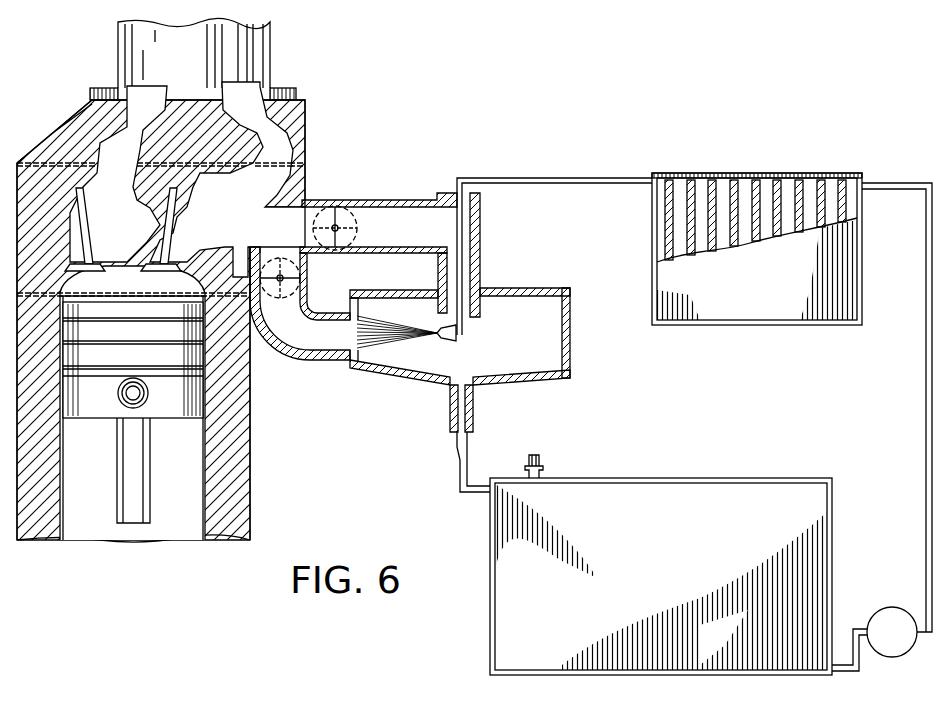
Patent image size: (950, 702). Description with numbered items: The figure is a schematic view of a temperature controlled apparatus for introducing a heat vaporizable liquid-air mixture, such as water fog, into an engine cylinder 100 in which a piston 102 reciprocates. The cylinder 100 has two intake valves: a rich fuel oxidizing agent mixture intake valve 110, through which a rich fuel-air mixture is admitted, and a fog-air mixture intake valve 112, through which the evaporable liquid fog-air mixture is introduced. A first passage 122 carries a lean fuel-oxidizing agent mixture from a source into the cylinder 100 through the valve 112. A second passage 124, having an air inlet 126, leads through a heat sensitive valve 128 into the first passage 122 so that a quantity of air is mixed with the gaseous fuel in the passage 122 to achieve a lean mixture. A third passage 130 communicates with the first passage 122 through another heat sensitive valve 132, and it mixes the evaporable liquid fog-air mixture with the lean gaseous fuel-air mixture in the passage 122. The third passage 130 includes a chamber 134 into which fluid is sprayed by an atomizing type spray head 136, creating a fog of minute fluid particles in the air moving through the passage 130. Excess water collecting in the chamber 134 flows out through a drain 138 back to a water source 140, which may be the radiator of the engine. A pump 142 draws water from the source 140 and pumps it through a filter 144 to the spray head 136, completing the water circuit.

The cylinder 100 is at (242, 454).
The piston 102 is at (108, 410).
The rich fuel oxidizing agent mixture intake valve 110 is at (87, 240).
The fog-air mixture intake valve 112 is at (177, 236).
The first passage 122 is at (272, 222).
The second passage 124 is at (392, 215).
The air inlet 126 is at (450, 193).
The heat sensitive valve 128 is at (350, 240).
The third passage 130 is at (312, 350).
The heat sensitive valve 132 is at (272, 303).
The chamber 134 is at (407, 365).
The atomizing type spray head 136 is at (443, 336).
The drain 138 is at (475, 409).
The water source 140 is at (630, 490).
The pump 142 is at (887, 607).
The filter 144 is at (777, 285).